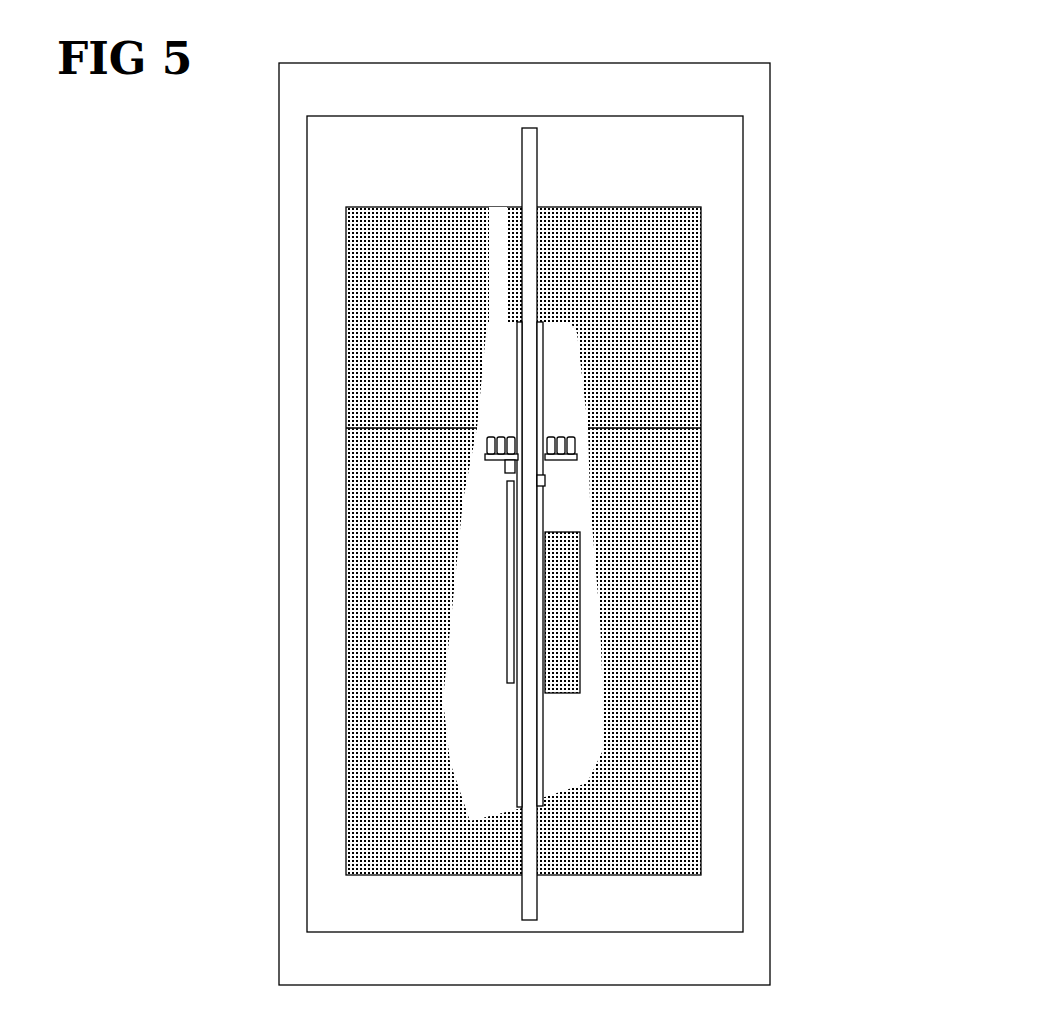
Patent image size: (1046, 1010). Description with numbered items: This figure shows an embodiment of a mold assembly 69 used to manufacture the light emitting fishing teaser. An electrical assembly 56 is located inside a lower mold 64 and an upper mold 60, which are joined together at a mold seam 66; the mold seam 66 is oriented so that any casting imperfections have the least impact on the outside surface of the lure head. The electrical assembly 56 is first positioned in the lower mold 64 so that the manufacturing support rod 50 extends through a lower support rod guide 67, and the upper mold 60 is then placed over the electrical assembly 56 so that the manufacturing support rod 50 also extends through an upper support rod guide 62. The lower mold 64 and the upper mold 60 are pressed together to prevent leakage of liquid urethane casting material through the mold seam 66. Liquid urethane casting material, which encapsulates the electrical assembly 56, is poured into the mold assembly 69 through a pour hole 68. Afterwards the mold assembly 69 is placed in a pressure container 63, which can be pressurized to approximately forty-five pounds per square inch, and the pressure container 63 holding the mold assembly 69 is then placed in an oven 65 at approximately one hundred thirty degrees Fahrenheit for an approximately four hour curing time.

The manufacturing support rod 50 is at (537, 163).
The electrical assembly 56 is at (543, 493).
The upper mold 60 is at (701, 343).
The upper support rod guide 62 is at (538, 219).
The pressure container 63 is at (306, 393).
The lower mold 64 is at (701, 725).
The oven 65 is at (277, 625).
The mold seam 66 is at (701, 428).
The lower support rod guide 67 is at (540, 847).
The pour hole 68 is at (489, 252).
The mold assembly 69 is at (703, 127).